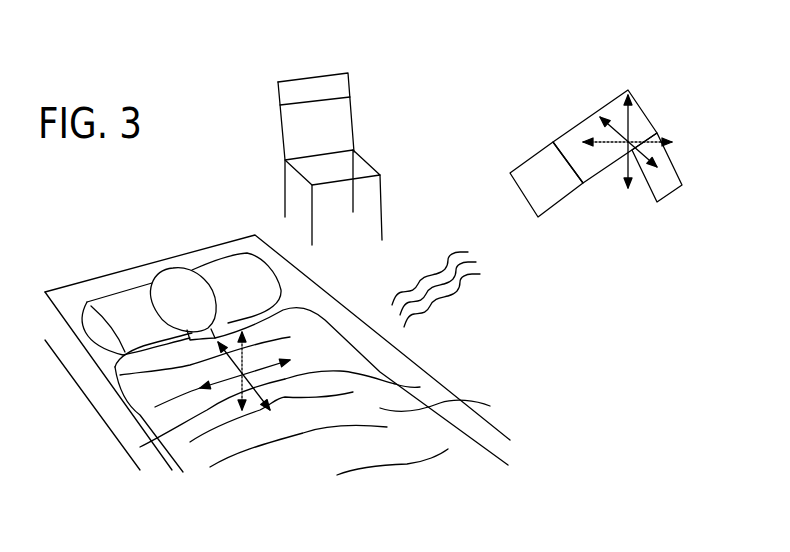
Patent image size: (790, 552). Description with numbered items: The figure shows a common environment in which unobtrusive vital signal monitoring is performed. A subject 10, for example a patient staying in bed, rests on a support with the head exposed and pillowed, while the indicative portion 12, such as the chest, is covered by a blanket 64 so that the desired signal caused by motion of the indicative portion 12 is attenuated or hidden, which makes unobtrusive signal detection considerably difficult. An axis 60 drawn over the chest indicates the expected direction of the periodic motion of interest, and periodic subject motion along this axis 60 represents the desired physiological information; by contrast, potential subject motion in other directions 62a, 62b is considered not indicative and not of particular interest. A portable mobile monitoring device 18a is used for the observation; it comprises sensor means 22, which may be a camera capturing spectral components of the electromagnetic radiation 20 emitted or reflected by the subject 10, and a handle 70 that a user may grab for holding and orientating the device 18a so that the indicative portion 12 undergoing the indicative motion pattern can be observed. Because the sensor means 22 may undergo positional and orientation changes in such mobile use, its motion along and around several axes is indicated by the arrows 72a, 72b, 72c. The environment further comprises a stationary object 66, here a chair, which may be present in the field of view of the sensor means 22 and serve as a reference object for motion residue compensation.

The subject 10 is at (170, 288).
The indicative portion 12 is at (262, 356).
The portable mobile monitoring device 18a is at (624, 127).
The electromagnetic radiation 20 is at (455, 290).
The sensor means 22 is at (590, 167).
The axis 60 is at (120, 375).
The non-indicative motion direction 62a is at (140, 447).
The non-indicative motion direction 62b is at (420, 387).
The blanket 64 is at (490, 406).
The stationary object 66 is at (358, 167).
The handle 70 is at (668, 185).
The sensor motion axis 72a is at (605, 143).
The sensor motion axis 72b is at (630, 127).
The sensor motion axis 72c is at (645, 157).